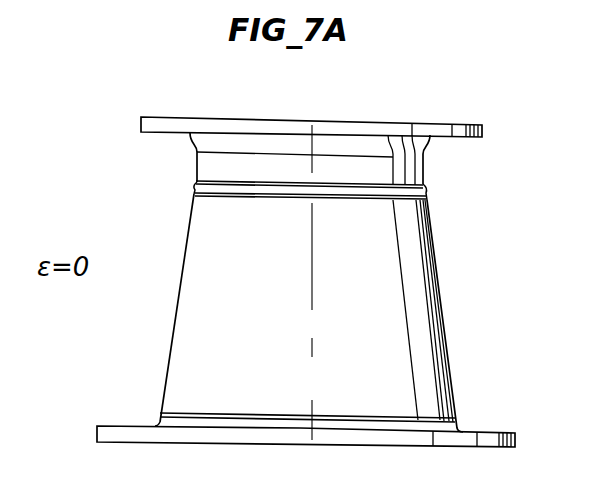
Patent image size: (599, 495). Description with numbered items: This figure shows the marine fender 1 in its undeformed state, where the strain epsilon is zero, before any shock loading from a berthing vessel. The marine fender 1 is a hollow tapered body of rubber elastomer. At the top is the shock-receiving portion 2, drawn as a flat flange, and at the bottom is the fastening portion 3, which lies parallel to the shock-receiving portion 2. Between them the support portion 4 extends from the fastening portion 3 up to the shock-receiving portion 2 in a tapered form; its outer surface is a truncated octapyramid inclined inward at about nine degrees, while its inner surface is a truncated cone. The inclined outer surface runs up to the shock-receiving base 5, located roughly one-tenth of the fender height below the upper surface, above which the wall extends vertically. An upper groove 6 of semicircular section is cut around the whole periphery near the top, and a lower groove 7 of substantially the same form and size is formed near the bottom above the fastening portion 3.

The marine fender 1 is at (459, 115).
The shock-receiving portion 2 is at (331, 117).
The fastening portion 3 is at (342, 435).
The support portion 4 is at (415, 303).
The shock-receiving base 5 is at (427, 155).
The upper groove 6 is at (193, 186).
The lower groove 7 is at (160, 422).